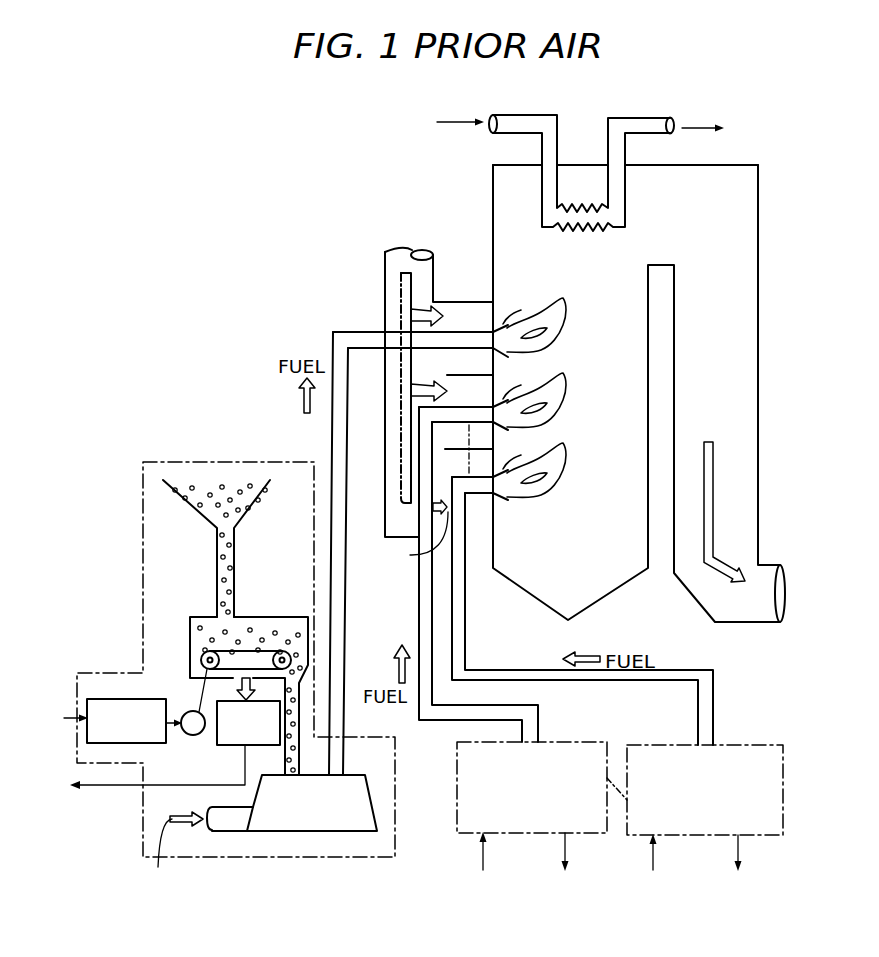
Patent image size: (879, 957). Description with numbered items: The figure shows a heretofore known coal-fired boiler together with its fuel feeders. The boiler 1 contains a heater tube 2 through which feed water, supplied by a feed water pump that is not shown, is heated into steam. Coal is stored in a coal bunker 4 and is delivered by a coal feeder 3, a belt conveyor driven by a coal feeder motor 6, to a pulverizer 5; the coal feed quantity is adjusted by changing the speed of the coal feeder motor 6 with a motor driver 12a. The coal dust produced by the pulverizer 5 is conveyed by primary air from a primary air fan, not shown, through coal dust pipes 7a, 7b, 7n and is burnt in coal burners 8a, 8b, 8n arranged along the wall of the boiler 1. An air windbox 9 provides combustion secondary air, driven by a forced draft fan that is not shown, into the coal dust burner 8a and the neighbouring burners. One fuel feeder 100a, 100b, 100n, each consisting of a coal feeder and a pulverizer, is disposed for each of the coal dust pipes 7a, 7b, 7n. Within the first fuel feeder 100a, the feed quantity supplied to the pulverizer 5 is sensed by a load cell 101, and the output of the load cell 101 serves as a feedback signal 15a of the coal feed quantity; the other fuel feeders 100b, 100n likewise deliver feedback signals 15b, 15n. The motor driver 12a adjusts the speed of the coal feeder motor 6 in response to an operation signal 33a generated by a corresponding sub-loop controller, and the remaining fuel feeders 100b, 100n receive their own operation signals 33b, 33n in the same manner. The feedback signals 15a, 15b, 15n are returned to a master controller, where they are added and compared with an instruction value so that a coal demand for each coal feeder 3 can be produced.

The boiler 1 is at (738, 167).
The heater tube 2 is at (625, 117).
The coal feeder 3 is at (262, 617).
The coal bunker 4 is at (271, 488).
The pulverizer 5 is at (373, 803).
The coal feeder motor 6 is at (188, 735).
The coal dust pipe 7a is at (349, 579).
The coal dust pipe 7b is at (419, 612).
The coal dust pipe 7n is at (467, 608).
The coal dust burner 8a is at (500, 323).
The coal burner 8b is at (500, 403).
The coal burner 8n is at (500, 503).
The air windbox 9 is at (385, 278).
The motor driver 12a is at (156, 699).
The feedback signal 15a is at (102, 787).
The feedback signal 15b is at (567, 864).
The feedback signal 15n is at (737, 865).
The operation signal 33a is at (64, 718).
The operation signal 33b is at (487, 864).
The operation signal 33n is at (653, 865).
The fuel feeder 100a is at (155, 461).
The fuel feeder 100b is at (574, 723).
The fuel feeder 100n is at (750, 727).
The load cell 101 is at (227, 746).